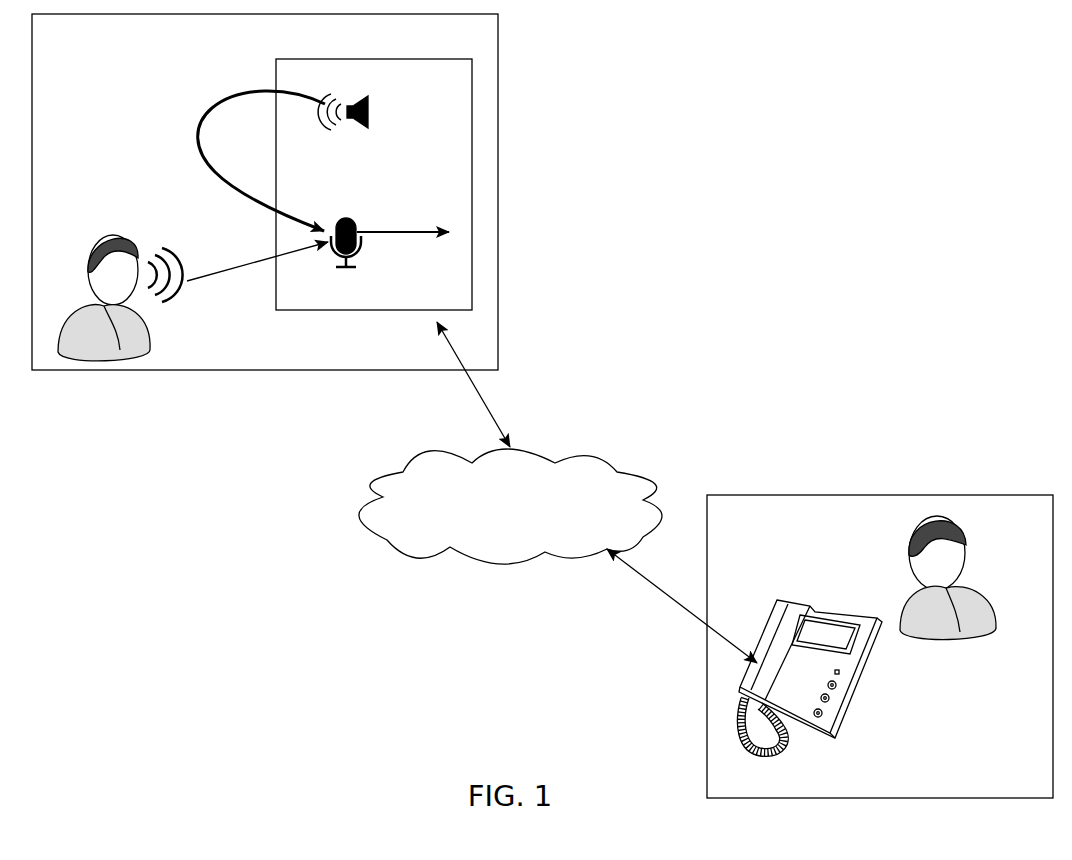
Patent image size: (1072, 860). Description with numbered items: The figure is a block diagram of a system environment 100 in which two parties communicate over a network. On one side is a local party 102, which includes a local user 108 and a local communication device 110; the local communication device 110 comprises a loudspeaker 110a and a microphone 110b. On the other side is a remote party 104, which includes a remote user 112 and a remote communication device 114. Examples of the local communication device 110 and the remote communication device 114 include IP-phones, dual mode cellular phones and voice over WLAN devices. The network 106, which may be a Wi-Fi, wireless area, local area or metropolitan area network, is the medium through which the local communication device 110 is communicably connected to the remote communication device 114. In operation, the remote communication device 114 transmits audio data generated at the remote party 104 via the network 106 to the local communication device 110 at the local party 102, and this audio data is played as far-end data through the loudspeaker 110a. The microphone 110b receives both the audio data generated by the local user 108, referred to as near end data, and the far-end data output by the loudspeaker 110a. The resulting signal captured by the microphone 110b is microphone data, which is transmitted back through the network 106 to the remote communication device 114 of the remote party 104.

The system environment 100 is at (115, 713).
The local party 102 is at (247, 40).
The remote party 104 is at (862, 516).
The network 106 is at (492, 528).
The local user 108 is at (112, 233).
The local communication device 110 is at (344, 81).
The loudspeaker 110a is at (369, 112).
The microphone 110b is at (349, 258).
The remote user 112 is at (967, 577).
The remote communication device 114 is at (838, 718).